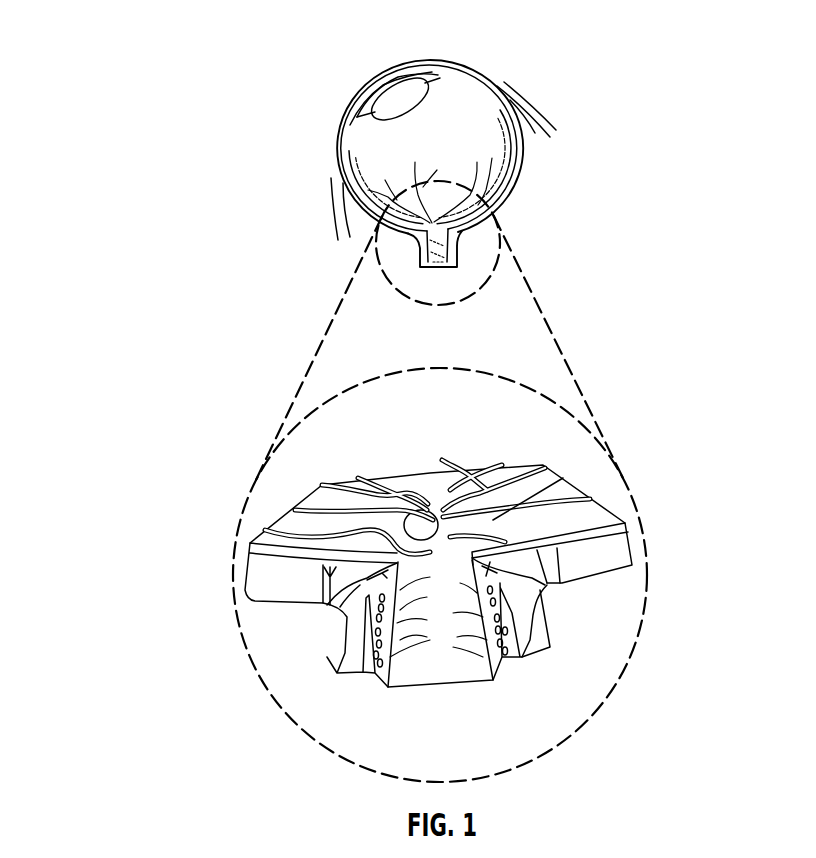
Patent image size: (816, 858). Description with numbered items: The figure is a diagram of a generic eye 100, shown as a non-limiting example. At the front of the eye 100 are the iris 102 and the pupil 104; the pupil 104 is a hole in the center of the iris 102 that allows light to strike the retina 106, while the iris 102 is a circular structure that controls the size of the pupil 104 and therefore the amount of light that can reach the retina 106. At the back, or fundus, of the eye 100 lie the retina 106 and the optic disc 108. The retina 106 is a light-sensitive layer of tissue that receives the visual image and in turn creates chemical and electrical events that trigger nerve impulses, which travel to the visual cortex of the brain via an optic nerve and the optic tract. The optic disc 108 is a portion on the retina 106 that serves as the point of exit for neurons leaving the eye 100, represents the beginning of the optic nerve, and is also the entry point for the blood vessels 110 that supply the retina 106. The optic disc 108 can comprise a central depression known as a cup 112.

The eye 100 is at (167, 38).
The iris 102 is at (408, 78).
The pupil 104 is at (395, 84).
The retina 106 is at (490, 136).
The optic disc 108 is at (437, 497).
The blood vessels 110 is at (287, 536).
The cup 112 is at (563, 478).